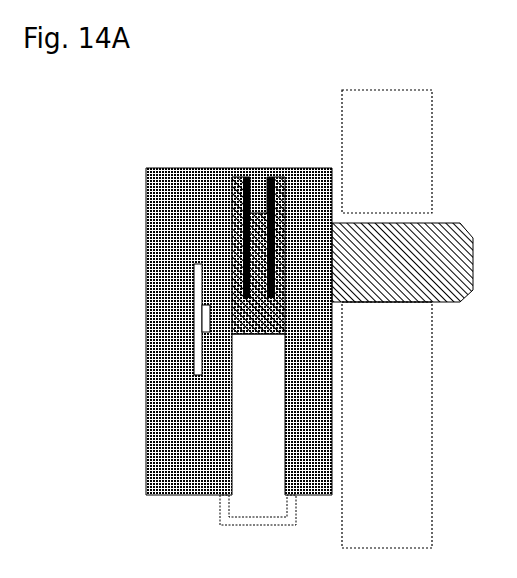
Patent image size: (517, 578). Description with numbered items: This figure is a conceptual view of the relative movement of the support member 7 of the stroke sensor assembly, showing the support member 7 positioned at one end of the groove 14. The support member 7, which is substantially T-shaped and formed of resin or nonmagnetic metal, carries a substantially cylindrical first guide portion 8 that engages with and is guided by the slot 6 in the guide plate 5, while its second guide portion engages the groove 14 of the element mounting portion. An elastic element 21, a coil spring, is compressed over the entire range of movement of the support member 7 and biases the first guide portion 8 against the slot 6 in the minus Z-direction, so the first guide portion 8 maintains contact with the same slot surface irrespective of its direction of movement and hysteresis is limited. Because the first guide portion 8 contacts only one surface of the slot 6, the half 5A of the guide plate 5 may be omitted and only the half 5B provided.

The guide plate 5 is at (418, 284).
The half of guide plate 5A is at (420, 132).
The half of guide plate 5B is at (418, 489).
The slot 6 is at (392, 213).
The support member 7 is at (233, 258).
The first guide portion 8 is at (400, 298).
The groove 14 is at (232, 466).
The elastic element 21 is at (247, 205).